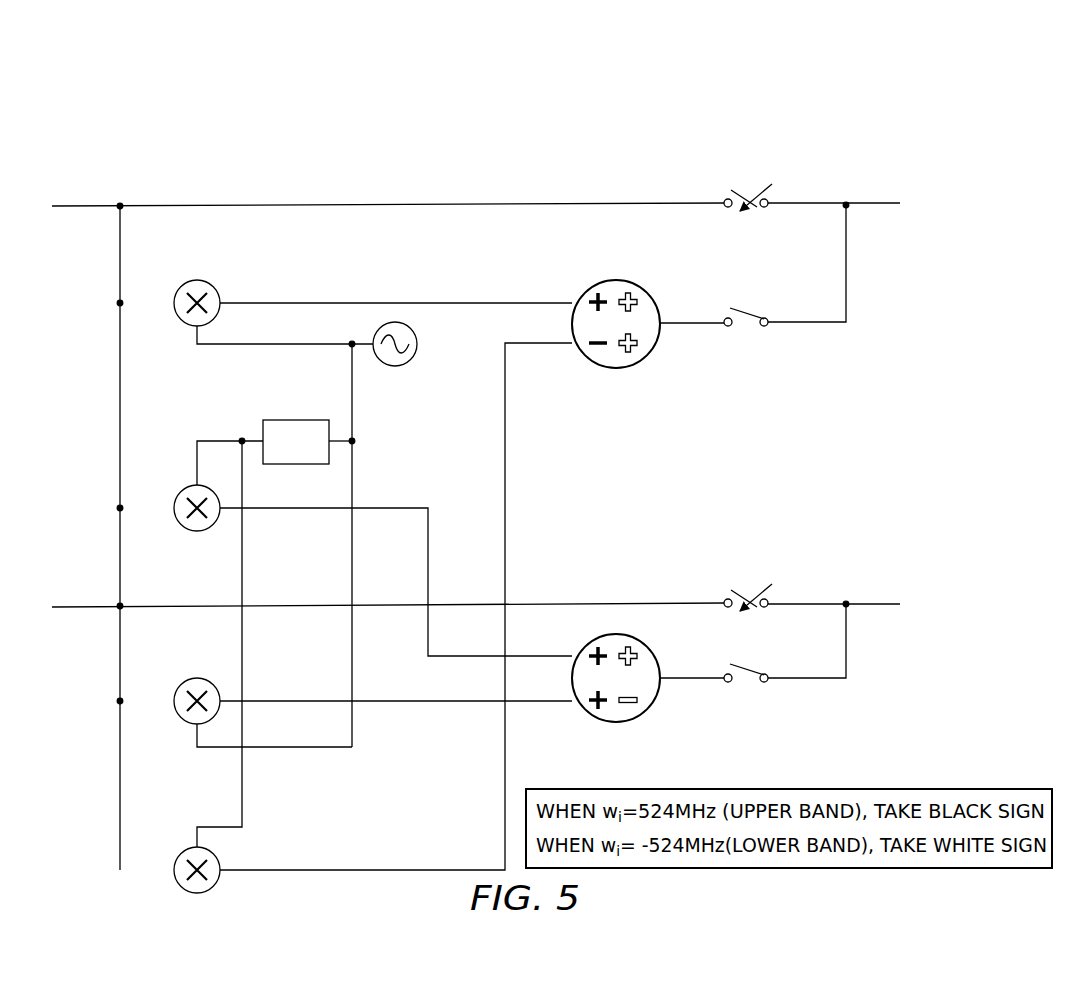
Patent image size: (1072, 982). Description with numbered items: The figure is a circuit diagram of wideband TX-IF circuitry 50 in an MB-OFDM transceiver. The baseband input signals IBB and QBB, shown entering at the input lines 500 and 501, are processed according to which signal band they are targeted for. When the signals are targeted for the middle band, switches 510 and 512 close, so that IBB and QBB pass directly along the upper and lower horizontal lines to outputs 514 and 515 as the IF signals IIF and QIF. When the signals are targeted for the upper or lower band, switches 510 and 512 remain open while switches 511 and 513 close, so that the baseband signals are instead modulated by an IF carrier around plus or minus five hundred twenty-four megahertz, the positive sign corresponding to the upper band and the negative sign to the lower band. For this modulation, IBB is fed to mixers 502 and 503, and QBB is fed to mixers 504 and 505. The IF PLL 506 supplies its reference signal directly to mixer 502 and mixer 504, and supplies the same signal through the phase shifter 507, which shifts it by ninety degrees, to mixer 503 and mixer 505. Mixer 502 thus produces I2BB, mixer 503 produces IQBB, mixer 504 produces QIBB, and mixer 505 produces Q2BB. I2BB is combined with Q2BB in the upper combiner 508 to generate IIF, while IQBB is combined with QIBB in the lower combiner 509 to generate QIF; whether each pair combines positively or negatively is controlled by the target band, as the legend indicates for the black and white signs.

The wideband TX-IF circuitry 50 is at (146, 127).
The I baseband input terminal (I_BB) 500 is at (64, 172).
The Q baseband input terminal (Q_BB) 501 is at (64, 578).
The mixer 502 is at (196, 280).
The mixer 503 is at (196, 532).
The mixer 504 is at (196, 678).
The mixer 505 is at (196, 894).
The IF PLL 506 is at (418, 342).
The phase shifter 507 is at (283, 418).
The adder/subtractor 508 is at (616, 278).
The adder/subtractor 509 is at (614, 723).
The switch 510 is at (746, 125).
The switch 511 is at (748, 330).
The switch 512 is at (747, 527).
The switch 513 is at (748, 686).
The output 514 is at (890, 170).
The output 515 is at (890, 570).